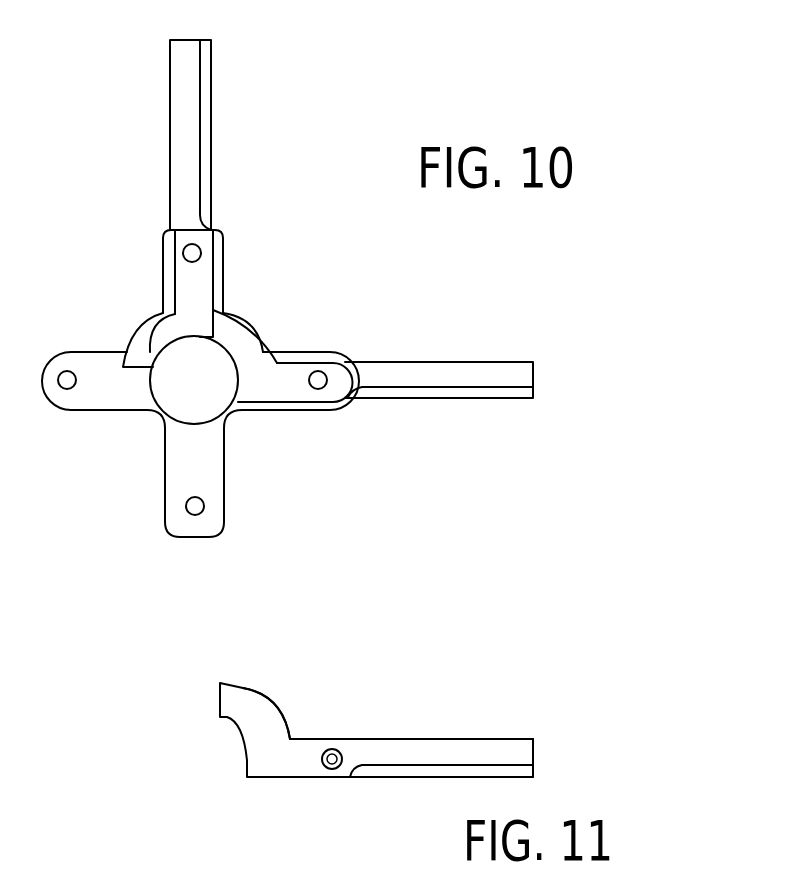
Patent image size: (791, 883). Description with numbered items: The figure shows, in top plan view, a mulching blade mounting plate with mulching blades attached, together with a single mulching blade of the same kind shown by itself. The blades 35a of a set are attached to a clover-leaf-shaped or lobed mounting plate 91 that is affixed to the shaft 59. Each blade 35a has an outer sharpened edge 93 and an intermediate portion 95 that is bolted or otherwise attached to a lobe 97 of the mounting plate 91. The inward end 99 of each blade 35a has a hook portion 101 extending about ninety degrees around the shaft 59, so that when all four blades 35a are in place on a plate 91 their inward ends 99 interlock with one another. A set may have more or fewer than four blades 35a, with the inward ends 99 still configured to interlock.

In FIG. 10, the mulching blade 35a is at (180, 115).
In FIG. 11, the mulching blade 35a is at (278, 763).
In FIG. 10, the outer sharpened edge 93 is at (212, 128).
In FIG. 10, the intermediate portion 95 is at (212, 233).
In FIG. 10, the lobe 97 is at (224, 277).
In FIG. 10, the mounting plate 91 is at (137, 443).
In FIG. 10, the shaft 59 is at (205, 405).
In FIG. 11, the inward end 99 is at (318, 700).
In FIG. 11, the hook portion 101 is at (237, 693).